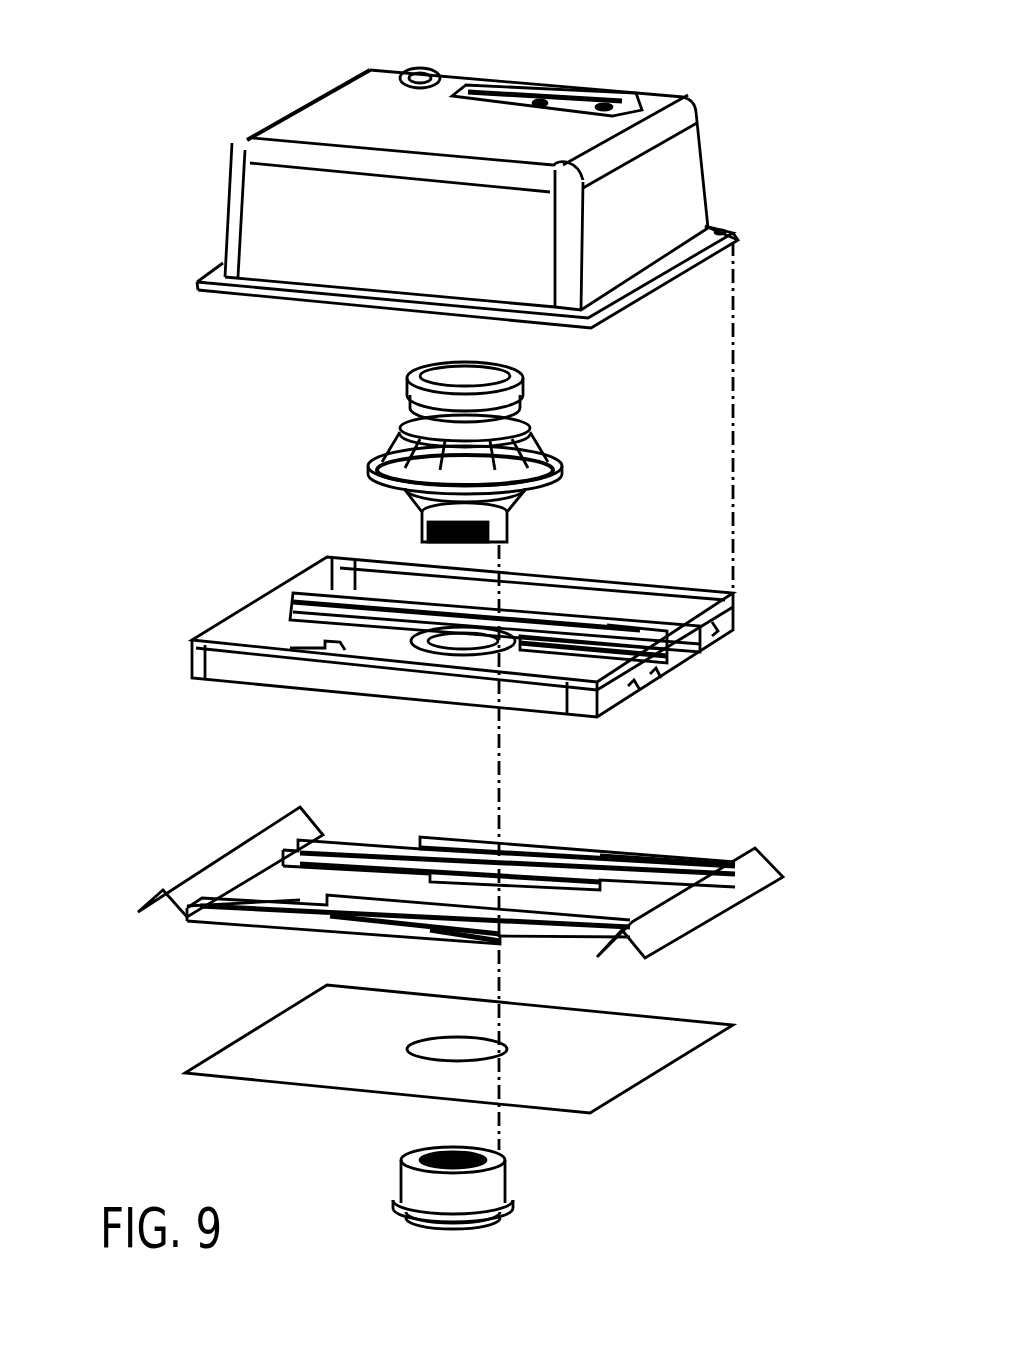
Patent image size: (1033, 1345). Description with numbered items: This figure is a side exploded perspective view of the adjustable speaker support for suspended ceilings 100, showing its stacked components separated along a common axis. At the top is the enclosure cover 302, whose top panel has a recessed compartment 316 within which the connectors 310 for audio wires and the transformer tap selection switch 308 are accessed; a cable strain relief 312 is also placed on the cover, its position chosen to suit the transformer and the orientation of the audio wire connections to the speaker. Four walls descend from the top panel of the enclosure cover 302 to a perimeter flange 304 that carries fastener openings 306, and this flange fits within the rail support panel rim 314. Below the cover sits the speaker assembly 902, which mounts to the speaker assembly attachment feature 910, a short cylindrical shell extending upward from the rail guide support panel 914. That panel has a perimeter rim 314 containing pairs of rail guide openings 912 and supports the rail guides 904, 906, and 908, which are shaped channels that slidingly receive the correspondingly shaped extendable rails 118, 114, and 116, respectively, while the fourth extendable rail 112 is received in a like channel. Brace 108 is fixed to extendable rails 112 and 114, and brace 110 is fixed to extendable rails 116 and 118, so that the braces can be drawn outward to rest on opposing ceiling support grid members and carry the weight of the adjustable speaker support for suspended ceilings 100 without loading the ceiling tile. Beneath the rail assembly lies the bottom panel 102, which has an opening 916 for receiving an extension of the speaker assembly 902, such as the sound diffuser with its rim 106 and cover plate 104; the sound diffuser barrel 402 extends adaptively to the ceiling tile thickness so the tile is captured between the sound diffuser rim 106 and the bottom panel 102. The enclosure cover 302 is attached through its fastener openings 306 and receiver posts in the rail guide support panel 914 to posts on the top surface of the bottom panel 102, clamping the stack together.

The adjustable speaker support for suspended ceilings 100 is at (163, 28).
The bottom panel 102 is at (258, 1085).
The cover plate 104 is at (425, 1220).
The sound diffuser rim 106 is at (515, 1207).
The brace 108 is at (295, 805).
The brace 110 is at (748, 865).
The extendable rail 112 is at (248, 912).
The extendable rail 114 is at (395, 848).
The extendable rail 116 is at (545, 934).
The extendable rail 118 is at (640, 858).
The enclosure cover 302 is at (680, 178).
The perimeter flange 304 is at (608, 300).
The fastener openings 306 is at (725, 228).
The transformer tap selection switch 308 is at (606, 106).
The connectors 310 is at (540, 104).
The cable strain relief 312 is at (415, 72).
The rail support panel rim 314 is at (538, 566).
The recessed compartment 316 is at (512, 88).
The sound diffuser barrel 402 is at (405, 1180).
The speaker assembly 902 is at (545, 455).
The rail guide 904 is at (640, 612).
The rail guide 906 is at (325, 598).
The rail guide 908 is at (345, 648).
The speaker assembly attachment feature 910 is at (510, 648).
The rail guide openings 912 is at (636, 686).
The rail guide support panel 914 is at (620, 642).
The opening 916 is at (410, 1045).